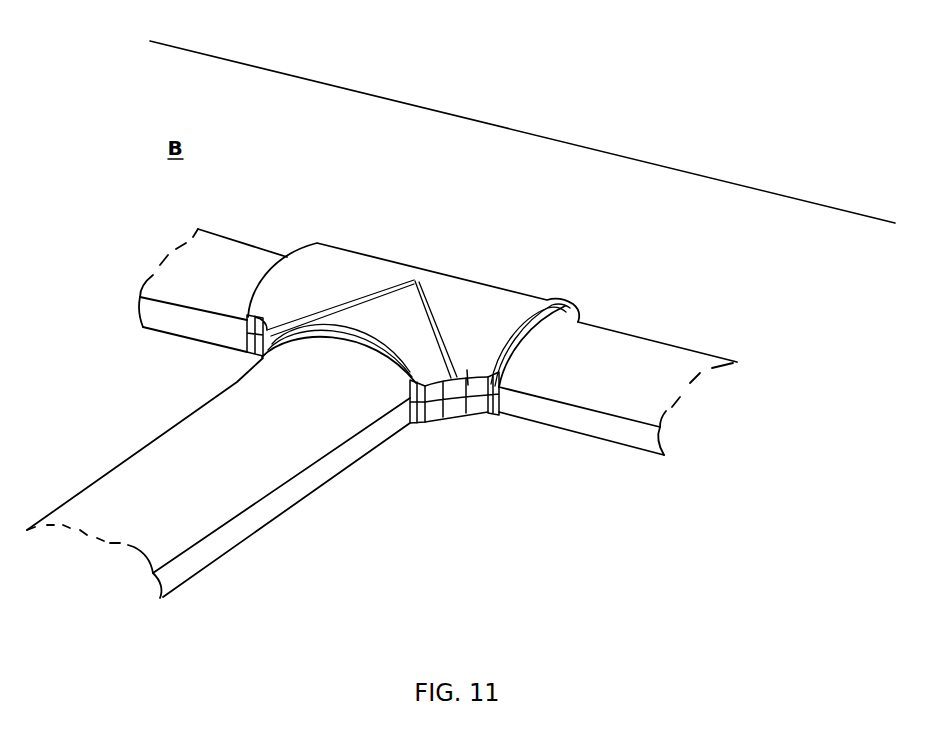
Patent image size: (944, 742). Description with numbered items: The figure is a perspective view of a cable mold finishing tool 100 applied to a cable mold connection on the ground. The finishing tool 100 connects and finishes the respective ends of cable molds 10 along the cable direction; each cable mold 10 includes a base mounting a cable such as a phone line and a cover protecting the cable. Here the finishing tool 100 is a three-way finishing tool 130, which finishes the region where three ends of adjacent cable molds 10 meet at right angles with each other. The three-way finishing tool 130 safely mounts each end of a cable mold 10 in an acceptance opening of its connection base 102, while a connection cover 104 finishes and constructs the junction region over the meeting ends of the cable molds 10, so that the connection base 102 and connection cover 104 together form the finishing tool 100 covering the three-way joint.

The cable mold 10 is at (231, 283).
The cable mold finishing tool 100 is at (413, 351).
The connection base 102 is at (444, 410).
The connection cover 104 is at (466, 410).
The three-way finishing tool 130 is at (466, 450).